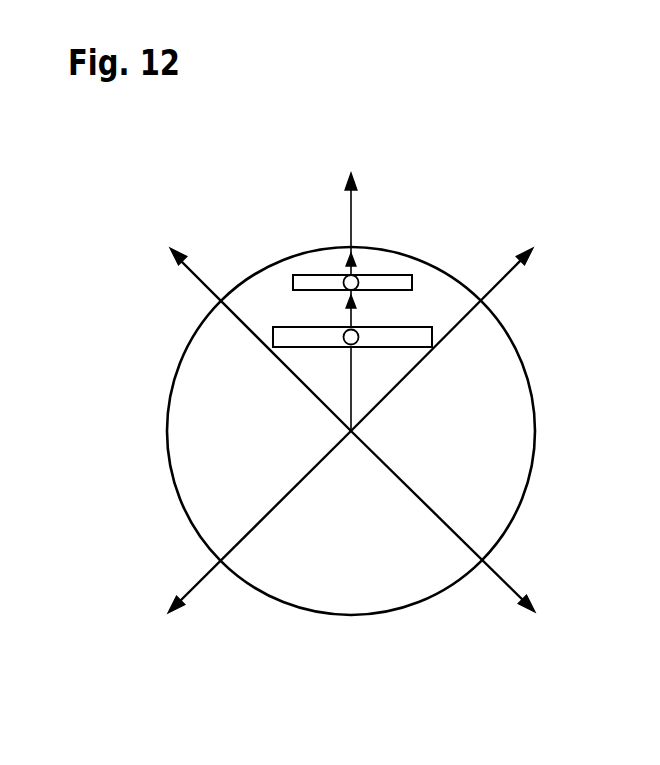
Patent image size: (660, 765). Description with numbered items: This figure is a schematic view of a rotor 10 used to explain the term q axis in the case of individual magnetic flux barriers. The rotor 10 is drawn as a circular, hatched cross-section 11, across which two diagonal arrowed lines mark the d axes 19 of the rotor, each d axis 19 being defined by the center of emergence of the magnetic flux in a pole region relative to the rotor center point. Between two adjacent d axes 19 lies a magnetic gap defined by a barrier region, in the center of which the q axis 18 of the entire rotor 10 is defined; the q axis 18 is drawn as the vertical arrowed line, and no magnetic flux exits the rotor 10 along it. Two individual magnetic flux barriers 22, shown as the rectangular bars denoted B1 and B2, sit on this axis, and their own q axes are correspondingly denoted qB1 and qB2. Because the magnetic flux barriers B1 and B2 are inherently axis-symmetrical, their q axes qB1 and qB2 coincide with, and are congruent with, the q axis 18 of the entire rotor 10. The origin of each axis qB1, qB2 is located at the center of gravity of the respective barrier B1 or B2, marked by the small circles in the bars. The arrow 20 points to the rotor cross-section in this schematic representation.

The rotor 10 is at (494, 153).
The rotor shaft cross-section 11 is at (185, 442).
The q axis 18 is at (353, 212).
The d axis 19 is at (190, 273).
The sectional plane 20 is at (247, 249).
The magnetic flux barrier 22 is at (285, 286).
The magnetic flux barrier B1 is at (400, 282).
The magnetic flux barrier B2 is at (282, 337).
The q axis of magnetic flux barrier B1 qB1 is at (346, 273).
The q axis of magnetic flux barrier B2 qB2 is at (343, 337).